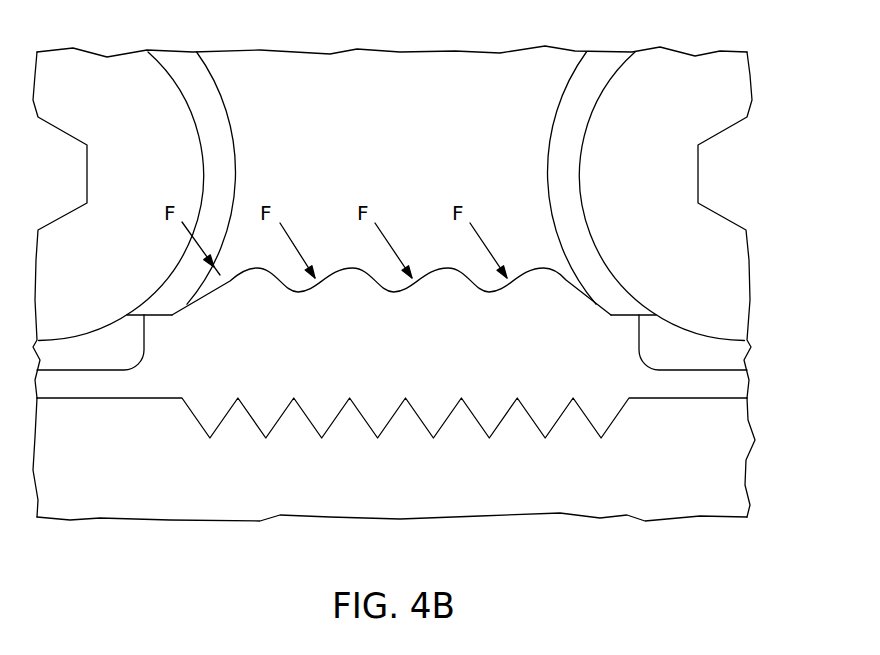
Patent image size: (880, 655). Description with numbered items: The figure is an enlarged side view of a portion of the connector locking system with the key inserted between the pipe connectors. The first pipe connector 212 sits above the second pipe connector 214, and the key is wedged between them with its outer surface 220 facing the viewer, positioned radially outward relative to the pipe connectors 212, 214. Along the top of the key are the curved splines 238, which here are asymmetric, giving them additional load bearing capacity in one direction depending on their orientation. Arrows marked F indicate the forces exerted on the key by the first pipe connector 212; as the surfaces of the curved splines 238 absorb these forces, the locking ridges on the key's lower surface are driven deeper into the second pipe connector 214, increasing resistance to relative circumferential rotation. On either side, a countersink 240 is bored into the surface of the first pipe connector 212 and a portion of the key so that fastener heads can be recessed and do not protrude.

The first pipe connector 212 is at (455, 62).
The second pipe connector 214 is at (158, 502).
The outer surface 220 is at (428, 352).
The curved splines 238 is at (445, 267).
The countersink 240 is at (217, 125).